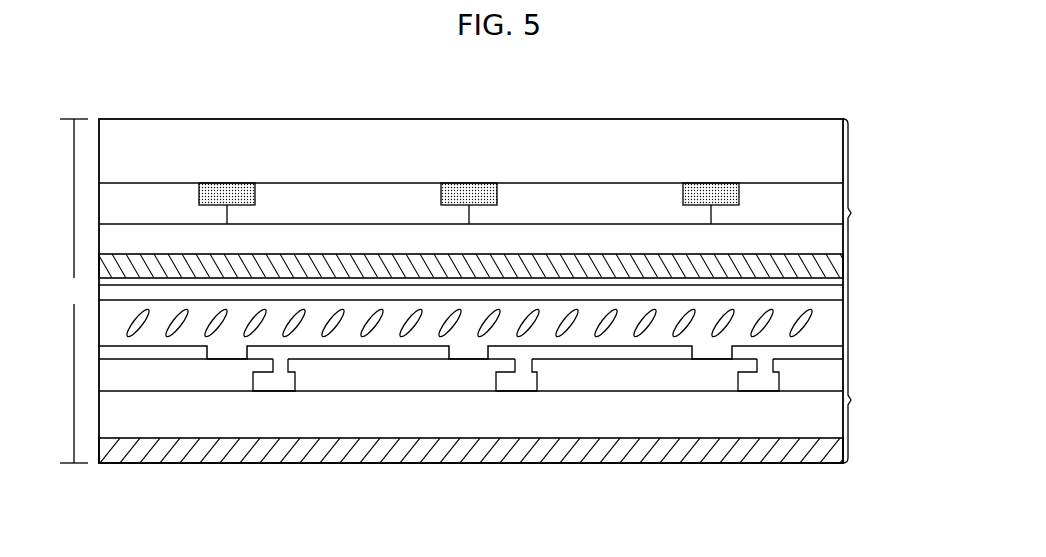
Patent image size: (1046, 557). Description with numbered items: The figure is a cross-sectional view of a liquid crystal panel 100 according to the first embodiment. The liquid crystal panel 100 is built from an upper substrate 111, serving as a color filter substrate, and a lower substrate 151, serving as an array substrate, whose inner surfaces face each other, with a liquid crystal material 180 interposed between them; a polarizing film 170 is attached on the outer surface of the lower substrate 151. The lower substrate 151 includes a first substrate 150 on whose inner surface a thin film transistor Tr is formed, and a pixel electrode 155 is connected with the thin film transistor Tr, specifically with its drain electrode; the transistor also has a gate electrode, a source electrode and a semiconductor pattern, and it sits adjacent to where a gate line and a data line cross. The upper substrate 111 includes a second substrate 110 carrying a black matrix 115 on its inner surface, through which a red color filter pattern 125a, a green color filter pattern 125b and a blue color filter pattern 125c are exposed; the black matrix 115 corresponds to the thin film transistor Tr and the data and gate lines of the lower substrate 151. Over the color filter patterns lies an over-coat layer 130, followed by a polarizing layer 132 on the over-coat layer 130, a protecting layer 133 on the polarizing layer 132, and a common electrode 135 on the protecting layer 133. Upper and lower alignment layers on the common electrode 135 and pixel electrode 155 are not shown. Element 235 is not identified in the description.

The liquid crystal panel 100 is at (74, 291).
The second substrate 110 is at (471, 162).
The upper substrate 111 is at (870, 209).
The black matrix 115 is at (710, 190).
The red color filter pattern 125a is at (373, 212).
The green color filter pattern 125b is at (543, 213).
The blue color filter pattern 125c is at (123, 205).
The over-coat layer 130 is at (318, 243).
The polarizing layer 132 is at (835, 265).
The protecting layer 133 is at (635, 280).
The common electrode 135 is at (835, 293).
The first substrate 150 is at (471, 406).
The lower substrate 151 is at (867, 381).
The pixel electrode 155 is at (833, 353).
The polarizing film 170 is at (833, 452).
The liquid crystal material 180 is at (833, 324).
The spacer 235 is at (277, 322).
The thin film transistor Tr is at (513, 380).